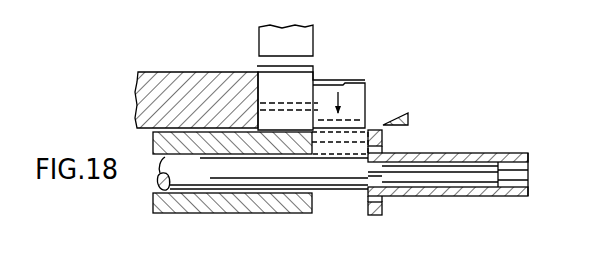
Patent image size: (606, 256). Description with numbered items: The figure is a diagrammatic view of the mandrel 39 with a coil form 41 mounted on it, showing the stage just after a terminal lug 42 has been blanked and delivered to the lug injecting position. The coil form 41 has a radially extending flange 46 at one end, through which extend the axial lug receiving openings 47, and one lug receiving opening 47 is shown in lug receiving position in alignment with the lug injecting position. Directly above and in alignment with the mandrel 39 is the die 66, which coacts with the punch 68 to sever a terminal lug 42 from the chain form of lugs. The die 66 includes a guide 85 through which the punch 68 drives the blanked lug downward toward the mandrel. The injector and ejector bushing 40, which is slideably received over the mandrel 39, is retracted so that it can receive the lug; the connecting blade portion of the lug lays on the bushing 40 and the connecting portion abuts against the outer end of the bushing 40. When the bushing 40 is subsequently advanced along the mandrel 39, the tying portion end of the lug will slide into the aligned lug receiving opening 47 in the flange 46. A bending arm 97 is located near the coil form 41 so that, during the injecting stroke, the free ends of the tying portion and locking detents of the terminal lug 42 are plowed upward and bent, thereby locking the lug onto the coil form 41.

The die 66 is at (229, 84).
The punch 68 is at (303, 44).
The terminal lug 42 is at (324, 78).
The guide 85 is at (365, 100).
The bending arm 97 is at (408, 118).
The lug receiving opening 47 is at (383, 146).
The coil form 41 is at (487, 151).
The injector and ejector bushing 40 is at (204, 200).
The mandrel 39 is at (341, 193).
The flange 46 is at (375, 215).